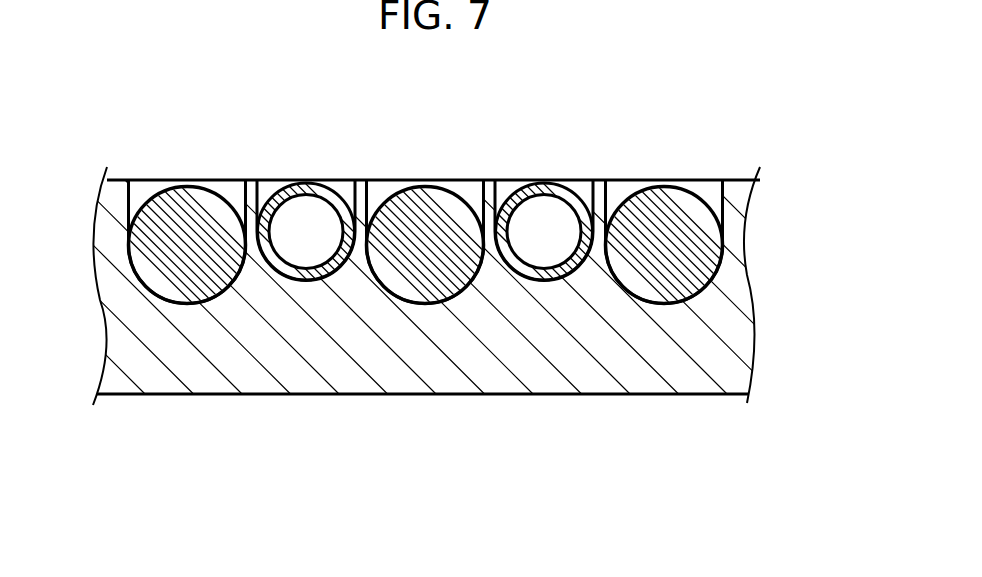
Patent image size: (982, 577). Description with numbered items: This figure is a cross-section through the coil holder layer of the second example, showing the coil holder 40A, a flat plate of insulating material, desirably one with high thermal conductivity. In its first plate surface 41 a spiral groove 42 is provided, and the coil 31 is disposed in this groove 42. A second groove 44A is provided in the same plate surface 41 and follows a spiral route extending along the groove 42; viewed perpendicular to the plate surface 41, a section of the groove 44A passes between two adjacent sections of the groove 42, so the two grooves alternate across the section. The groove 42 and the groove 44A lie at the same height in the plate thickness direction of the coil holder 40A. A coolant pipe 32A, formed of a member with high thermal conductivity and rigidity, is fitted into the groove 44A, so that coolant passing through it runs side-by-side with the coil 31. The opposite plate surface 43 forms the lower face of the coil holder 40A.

The coil 31 is at (182, 223).
The coolant pipe 32A is at (303, 188).
The coil holder 40A is at (735, 282).
The plate surface 41 is at (113, 177).
The groove 42 is at (232, 190).
The plate surface 43 is at (458, 394).
The groove 44A is at (345, 190).